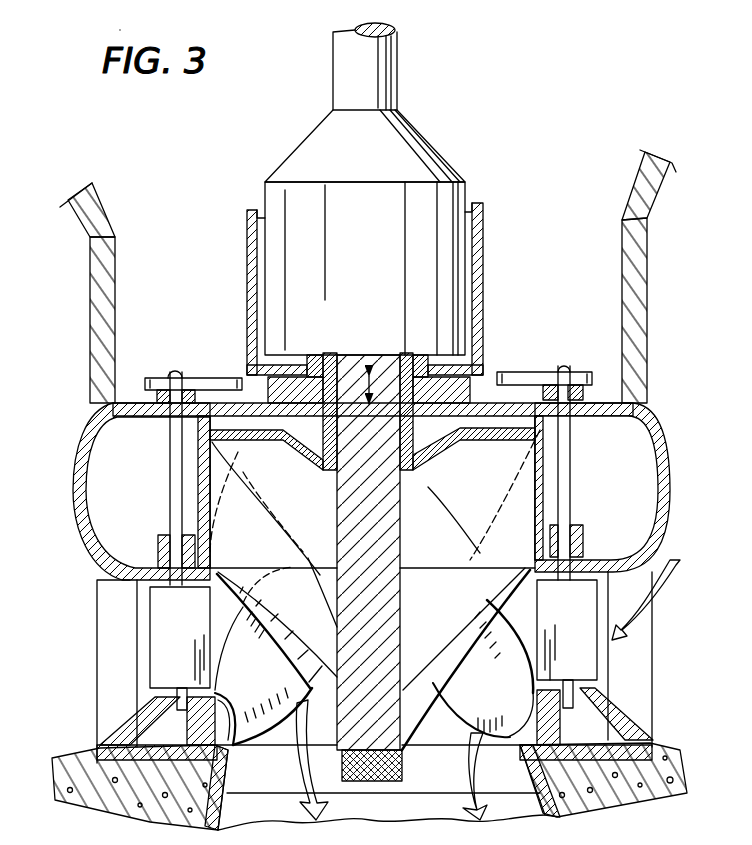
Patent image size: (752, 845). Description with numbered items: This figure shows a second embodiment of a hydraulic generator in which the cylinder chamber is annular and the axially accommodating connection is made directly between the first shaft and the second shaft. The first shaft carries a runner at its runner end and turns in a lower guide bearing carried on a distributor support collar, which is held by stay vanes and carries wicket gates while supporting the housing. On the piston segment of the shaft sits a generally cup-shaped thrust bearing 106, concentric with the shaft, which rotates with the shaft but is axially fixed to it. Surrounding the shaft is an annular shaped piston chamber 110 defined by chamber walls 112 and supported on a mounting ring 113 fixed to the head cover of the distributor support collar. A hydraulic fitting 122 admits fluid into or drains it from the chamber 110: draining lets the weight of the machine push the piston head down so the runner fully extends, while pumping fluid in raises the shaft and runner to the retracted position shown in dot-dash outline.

The thrust bearing 106 is at (412, 152).
The annular shaped piston chamber 110 is at (246, 208).
The chamber walls 112 is at (248, 240).
The mounting ring 113 is at (482, 380).
The hydraulic fitting 122 is at (135, 335).